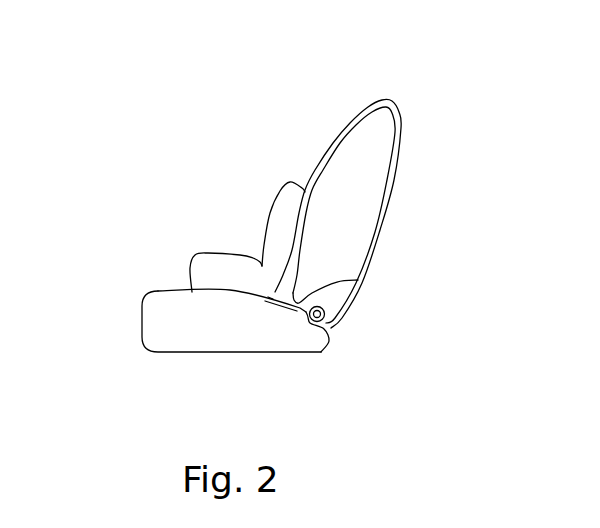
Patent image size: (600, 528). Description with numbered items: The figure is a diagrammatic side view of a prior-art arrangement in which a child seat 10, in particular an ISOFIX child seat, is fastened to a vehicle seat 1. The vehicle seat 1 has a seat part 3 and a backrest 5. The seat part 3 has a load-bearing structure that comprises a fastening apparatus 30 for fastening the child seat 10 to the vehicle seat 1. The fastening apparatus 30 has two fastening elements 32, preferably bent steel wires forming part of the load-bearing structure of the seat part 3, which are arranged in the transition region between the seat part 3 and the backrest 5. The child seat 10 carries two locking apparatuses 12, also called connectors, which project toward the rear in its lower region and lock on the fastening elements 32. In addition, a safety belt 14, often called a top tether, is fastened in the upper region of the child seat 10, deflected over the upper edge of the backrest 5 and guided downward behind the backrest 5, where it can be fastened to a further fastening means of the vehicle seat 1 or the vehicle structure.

The vehicle seat 1 is at (128, 303).
The seat part 3 is at (157, 305).
The backrest 5 is at (378, 158).
The child seat 10 is at (221, 265).
The locking apparatus 12 is at (278, 293).
The safety belt 14 is at (350, 121).
The fastening apparatus 30 is at (312, 327).
The fastening element 32 is at (325, 308).